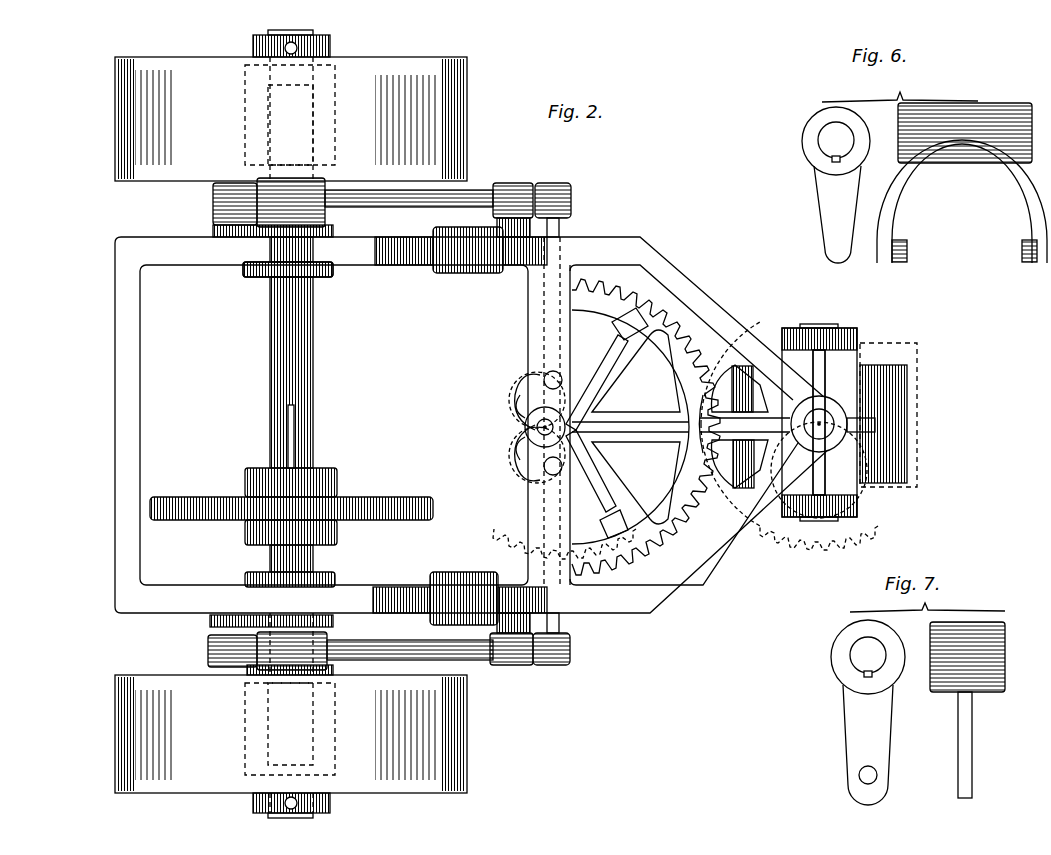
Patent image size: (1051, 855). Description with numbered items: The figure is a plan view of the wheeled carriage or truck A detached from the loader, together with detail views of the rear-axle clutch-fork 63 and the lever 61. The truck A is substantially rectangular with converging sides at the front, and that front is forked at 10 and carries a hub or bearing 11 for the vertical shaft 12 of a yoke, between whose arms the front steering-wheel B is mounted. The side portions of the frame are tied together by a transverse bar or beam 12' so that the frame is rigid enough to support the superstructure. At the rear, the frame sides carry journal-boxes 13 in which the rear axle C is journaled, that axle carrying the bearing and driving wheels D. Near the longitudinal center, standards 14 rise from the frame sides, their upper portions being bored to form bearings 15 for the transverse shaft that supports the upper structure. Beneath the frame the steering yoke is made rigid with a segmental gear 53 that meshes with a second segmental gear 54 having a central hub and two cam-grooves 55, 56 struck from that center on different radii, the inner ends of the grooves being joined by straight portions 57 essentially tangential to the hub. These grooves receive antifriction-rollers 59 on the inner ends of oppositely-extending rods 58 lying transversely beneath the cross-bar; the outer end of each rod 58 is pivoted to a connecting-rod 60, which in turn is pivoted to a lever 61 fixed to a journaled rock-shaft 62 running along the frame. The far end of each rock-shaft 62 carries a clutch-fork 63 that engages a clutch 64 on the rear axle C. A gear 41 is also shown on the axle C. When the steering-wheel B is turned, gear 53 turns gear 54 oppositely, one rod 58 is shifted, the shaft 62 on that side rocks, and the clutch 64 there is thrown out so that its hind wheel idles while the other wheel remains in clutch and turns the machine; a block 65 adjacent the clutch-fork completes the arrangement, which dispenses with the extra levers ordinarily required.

In FIG. 2, the fork 10 is at (880, 487).
In FIG. 2, the hub or bearing 11 is at (850, 422).
In FIG. 2, the vertical shaft 12 is at (898, 427).
In FIG. 2, the transverse bar or beam 12' is at (676, 386).
In FIG. 2, the journal-boxes 13 is at (332, 272).
In FIG. 2, the standards 14 is at (430, 590).
In FIG. 2, the bearings 15 is at (452, 275).
In FIG. 2, the gear 41 is at (200, 520).
In FIG. 2, the segmental gear 53 is at (690, 480).
In FIG. 2, the second segmental gear 54 is at (645, 512).
In FIG. 2, the cam-groove 55 is at (525, 397).
In FIG. 2, the cam-groove 56 is at (575, 400).
In FIG. 2, the straight portions 57 is at (545, 385).
In FIG. 2, the bars or rods 58 is at (556, 378).
In FIG. 2, the antifriction-roller 59 is at (632, 346).
In FIG. 2, the connecting-rod 60 is at (560, 227).
In FIG. 2, the lever 61 is at (560, 190).
In FIG. 7, the lever 61 is at (848, 638).
In FIG. 2, the rock-shaft 62 is at (468, 197).
In FIG. 2, the clutch-fork 63 is at (208, 640).
In FIG. 6, the clutch-fork 63 is at (822, 204).
In FIG. 2, the clutch 64 is at (330, 177).
In FIG. 2, the block 65 is at (212, 190).
In FIG. 2, the wheeled carriage or truck A is at (312, 276).
In FIG. 2, the front steering-wheel B is at (910, 472).
In FIG. 2, the rear axle C is at (313, 375).
In FIG. 2, the bearing and driving wheels D is at (452, 106).